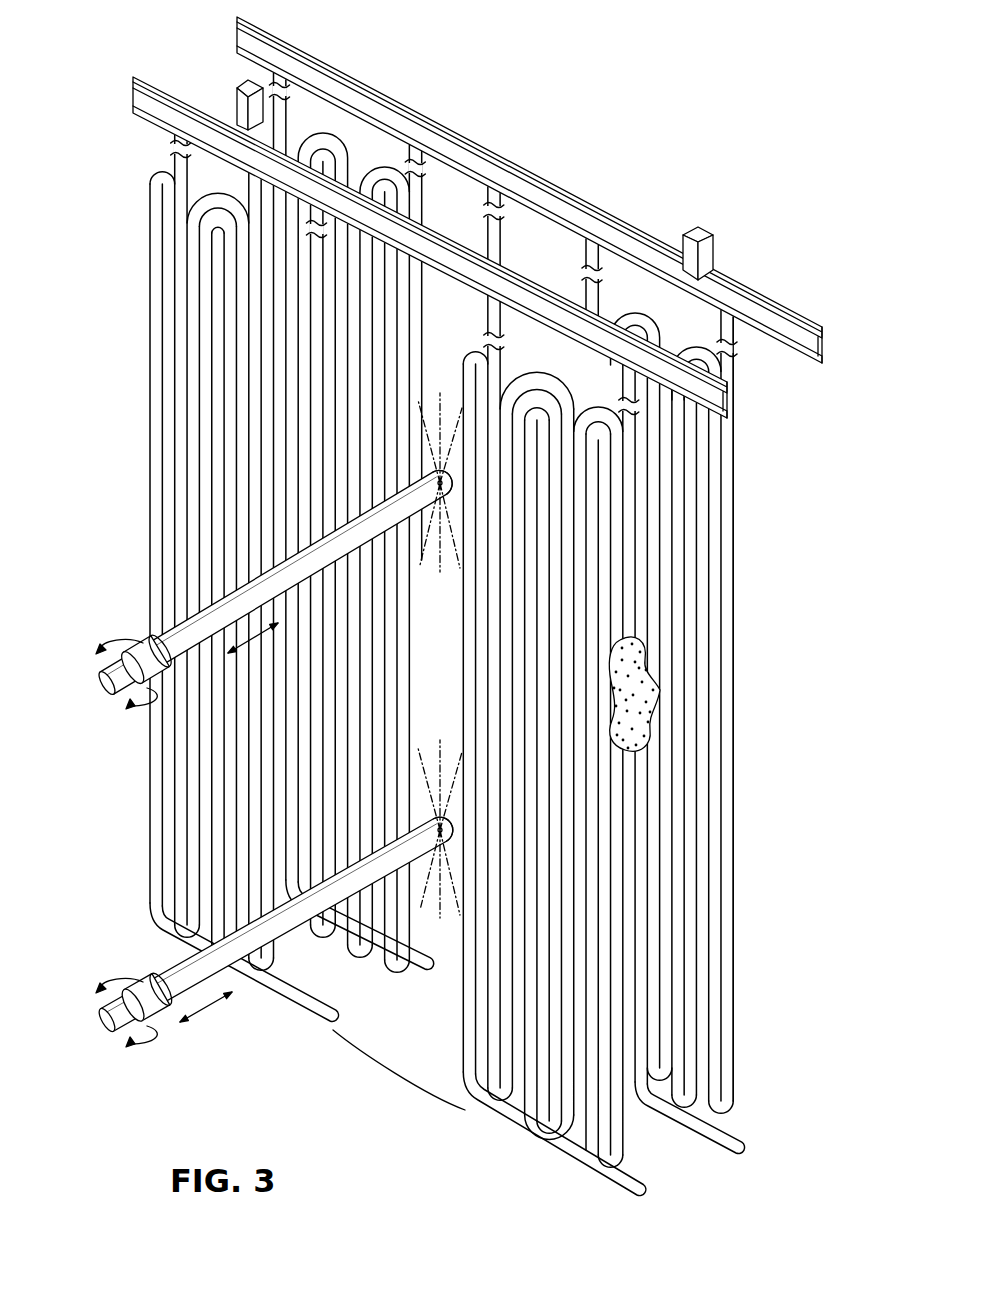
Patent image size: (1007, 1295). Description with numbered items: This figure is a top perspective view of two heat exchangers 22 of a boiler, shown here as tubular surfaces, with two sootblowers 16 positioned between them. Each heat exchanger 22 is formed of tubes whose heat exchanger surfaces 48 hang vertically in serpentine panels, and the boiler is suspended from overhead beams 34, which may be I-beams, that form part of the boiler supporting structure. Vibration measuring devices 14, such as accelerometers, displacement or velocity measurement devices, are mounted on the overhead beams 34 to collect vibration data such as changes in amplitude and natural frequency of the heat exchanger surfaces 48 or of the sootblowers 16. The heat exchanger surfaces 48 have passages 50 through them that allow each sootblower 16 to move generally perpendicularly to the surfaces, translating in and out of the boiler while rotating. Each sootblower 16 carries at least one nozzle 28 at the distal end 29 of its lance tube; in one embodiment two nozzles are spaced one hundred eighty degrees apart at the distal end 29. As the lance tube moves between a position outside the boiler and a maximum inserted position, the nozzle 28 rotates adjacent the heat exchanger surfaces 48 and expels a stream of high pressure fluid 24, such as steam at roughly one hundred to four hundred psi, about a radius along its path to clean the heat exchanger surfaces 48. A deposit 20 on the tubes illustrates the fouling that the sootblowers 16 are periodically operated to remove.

The vibration measuring device 14 is at (240, 84).
The sootblower 16 is at (133, 628).
The slag deposit 20 is at (612, 670).
The heat exchanger 22 is at (737, 486).
The high pressure fluid 24 is at (441, 470).
The nozzle 28 is at (439, 472).
The distal end 29 is at (448, 478).
The overhead beam 34 is at (165, 80).
The heat exchanger surface 48 is at (447, 634).
The passage 50 is at (399, 1070).